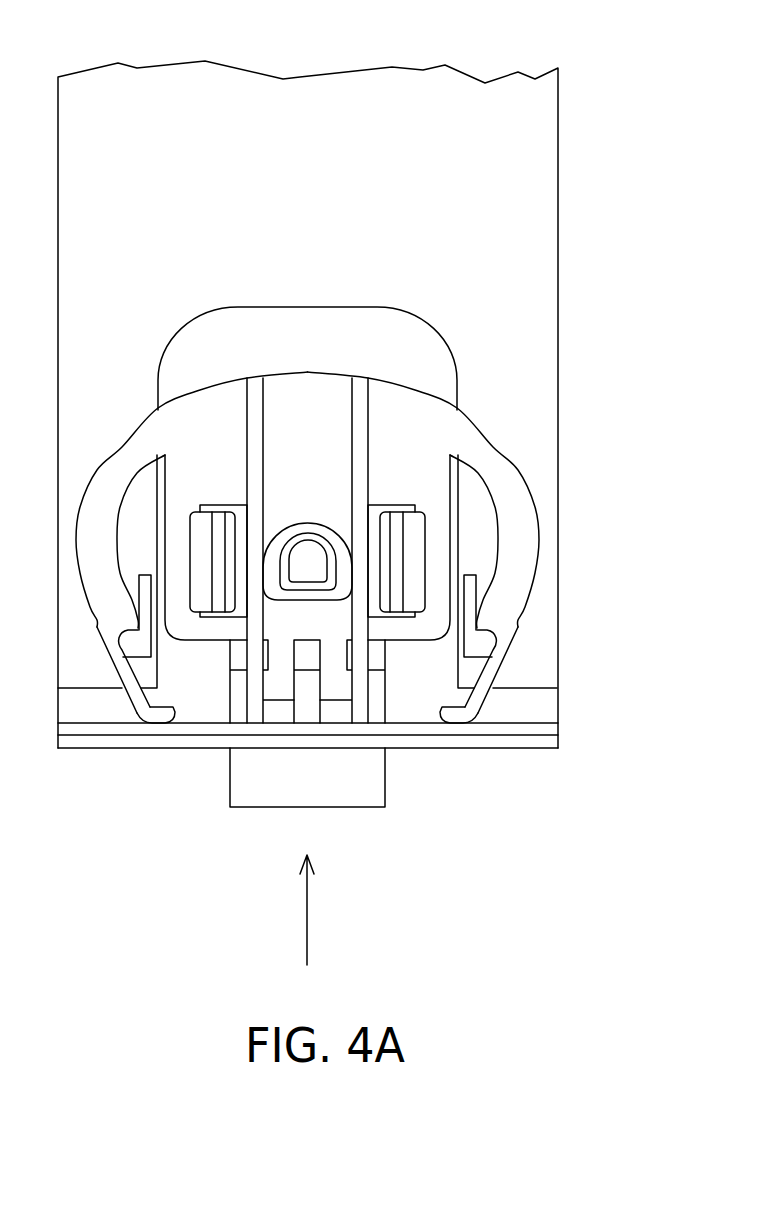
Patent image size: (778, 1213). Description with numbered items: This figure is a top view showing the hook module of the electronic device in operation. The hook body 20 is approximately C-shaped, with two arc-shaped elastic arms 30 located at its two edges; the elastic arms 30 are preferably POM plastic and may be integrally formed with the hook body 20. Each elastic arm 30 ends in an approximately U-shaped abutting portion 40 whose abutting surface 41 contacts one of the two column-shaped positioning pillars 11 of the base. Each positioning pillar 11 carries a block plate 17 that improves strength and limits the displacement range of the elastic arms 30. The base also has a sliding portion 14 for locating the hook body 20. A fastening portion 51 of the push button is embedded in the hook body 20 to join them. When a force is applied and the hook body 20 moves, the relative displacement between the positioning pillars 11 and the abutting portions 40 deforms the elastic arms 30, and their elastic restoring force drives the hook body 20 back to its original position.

The positioning pillar 11 is at (485, 648).
The sliding portion 14 is at (285, 327).
The block plate 17 is at (475, 588).
The hook body 20 is at (283, 805).
The elastic arm 30 is at (512, 490).
The abutting portion 40 is at (480, 693).
The abutting surface 41 is at (478, 673).
The fastening portion 51 is at (412, 535).